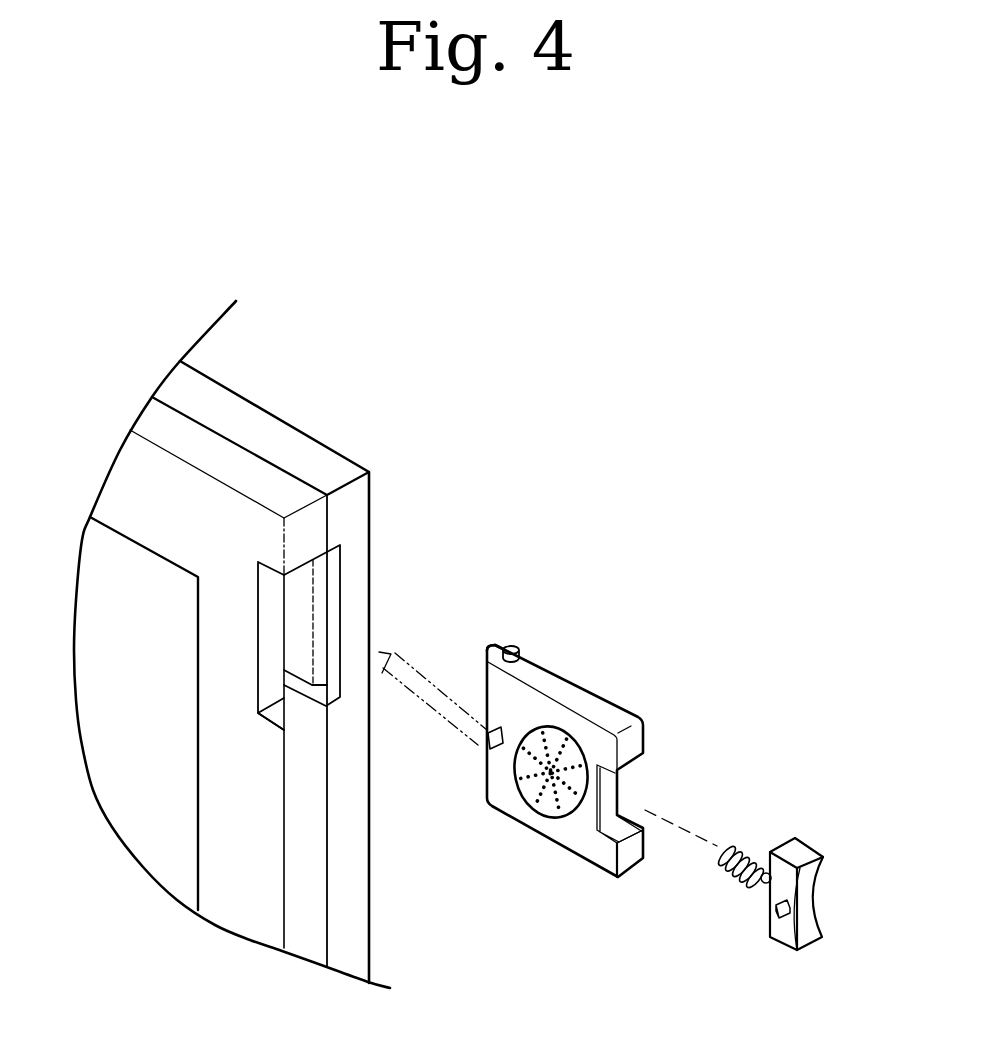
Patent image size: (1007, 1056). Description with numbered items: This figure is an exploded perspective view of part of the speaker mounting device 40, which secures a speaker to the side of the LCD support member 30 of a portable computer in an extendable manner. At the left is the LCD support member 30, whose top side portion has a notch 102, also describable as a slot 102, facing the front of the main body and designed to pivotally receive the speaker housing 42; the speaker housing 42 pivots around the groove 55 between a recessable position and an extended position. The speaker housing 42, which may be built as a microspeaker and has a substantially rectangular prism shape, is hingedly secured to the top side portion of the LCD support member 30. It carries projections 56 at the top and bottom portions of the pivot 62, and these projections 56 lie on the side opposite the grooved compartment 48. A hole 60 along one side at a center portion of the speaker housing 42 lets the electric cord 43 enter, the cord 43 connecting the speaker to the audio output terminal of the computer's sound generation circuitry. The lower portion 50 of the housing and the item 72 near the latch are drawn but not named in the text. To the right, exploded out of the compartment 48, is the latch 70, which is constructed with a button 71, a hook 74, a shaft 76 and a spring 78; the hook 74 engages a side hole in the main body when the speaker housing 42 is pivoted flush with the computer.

The LCD support member 30 is at (323, 453).
The groove 55 is at (323, 590).
The notch 102 is at (282, 718).
The electric cord 43 is at (438, 683).
The speaker mounting device 40 is at (577, 725).
The speaker housing 42 is at (560, 835).
The grooved compartment 48 is at (608, 800).
The lower lobe 50 is at (608, 843).
The projections 56 is at (495, 645).
The pivot 62 is at (512, 645).
The hole 60 is at (488, 745).
The spring 78 is at (737, 852).
The shaft 76 is at (763, 878).
The latch 70 is at (812, 848).
The button flat face 72 is at (823, 855).
The button 71 is at (812, 905).
The hook 74 is at (784, 917).